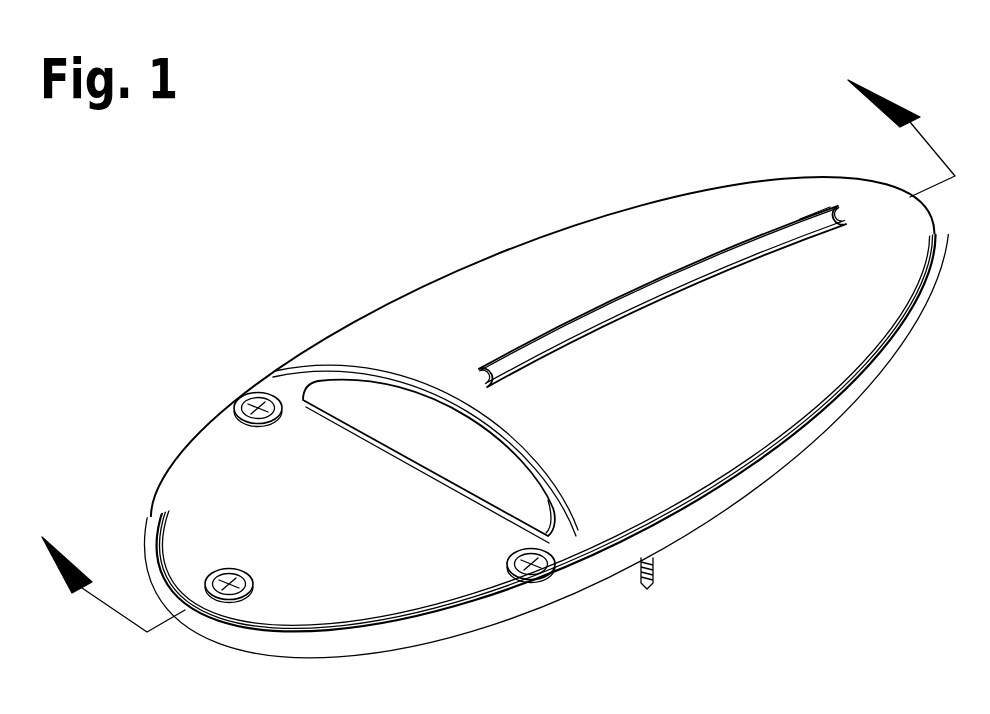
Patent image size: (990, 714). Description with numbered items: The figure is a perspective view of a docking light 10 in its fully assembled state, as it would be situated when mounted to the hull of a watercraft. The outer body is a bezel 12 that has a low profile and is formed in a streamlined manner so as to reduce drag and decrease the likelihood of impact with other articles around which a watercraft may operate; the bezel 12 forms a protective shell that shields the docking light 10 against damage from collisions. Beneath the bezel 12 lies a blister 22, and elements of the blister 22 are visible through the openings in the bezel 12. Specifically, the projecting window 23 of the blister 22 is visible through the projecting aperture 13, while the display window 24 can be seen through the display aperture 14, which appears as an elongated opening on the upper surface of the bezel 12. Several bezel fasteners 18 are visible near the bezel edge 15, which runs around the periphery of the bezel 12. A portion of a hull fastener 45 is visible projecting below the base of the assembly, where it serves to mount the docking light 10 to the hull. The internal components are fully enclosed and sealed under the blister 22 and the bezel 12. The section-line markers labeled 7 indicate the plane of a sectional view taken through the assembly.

The docking light 10 is at (320, 192).
The bezel 12 is at (440, 313).
The projecting aperture 13 is at (255, 396).
The display aperture 14 is at (812, 213).
The bezel edge 15 is at (163, 588).
The bezel fasteners 18 is at (252, 395).
The blister 22 is at (707, 267).
The projecting window 23 is at (373, 397).
The display window 24 is at (635, 303).
The hull fastener 45 is at (660, 572).
The section line 7- 7 is at (487, 339).